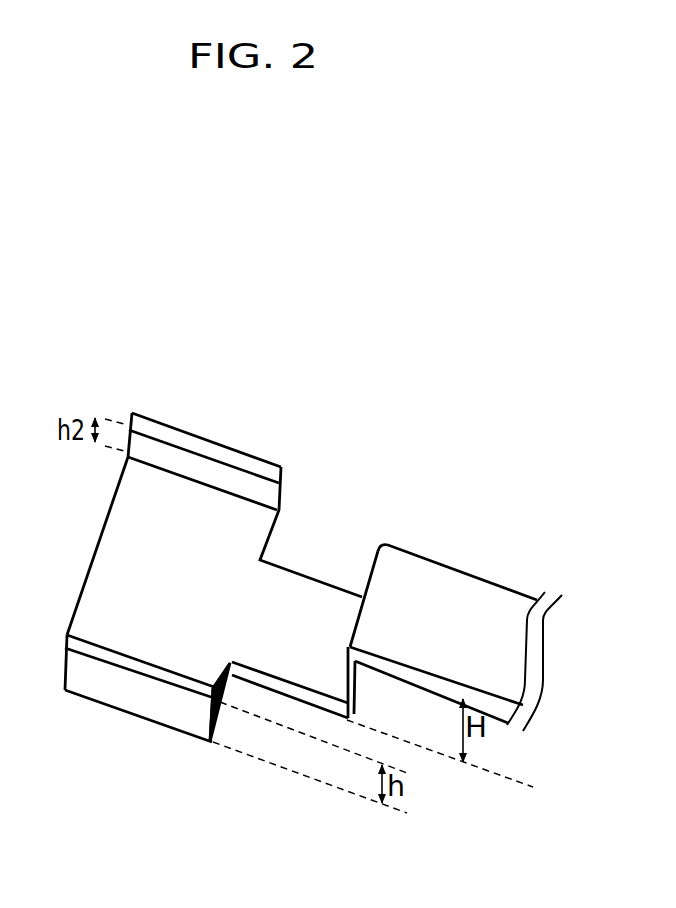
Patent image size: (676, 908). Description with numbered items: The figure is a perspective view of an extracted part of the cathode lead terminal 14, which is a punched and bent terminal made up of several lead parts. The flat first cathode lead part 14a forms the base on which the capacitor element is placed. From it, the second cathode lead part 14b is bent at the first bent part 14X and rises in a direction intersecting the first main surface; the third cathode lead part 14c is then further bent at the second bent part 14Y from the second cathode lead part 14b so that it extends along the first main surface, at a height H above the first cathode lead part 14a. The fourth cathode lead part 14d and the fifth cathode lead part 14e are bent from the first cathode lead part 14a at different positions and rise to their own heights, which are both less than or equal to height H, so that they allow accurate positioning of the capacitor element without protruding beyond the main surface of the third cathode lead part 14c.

The cathode lead terminal 14 is at (432, 326).
The first cathode lead part 14a is at (148, 565).
The second cathode lead part 14b is at (357, 685).
The third cathode lead part 14c is at (434, 602).
The fourth cathode lead part 14d is at (142, 690).
The fifth cathode lead part 14e is at (202, 467).
The first bent part 14X is at (349, 722).
The second bent part 14Y is at (352, 612).